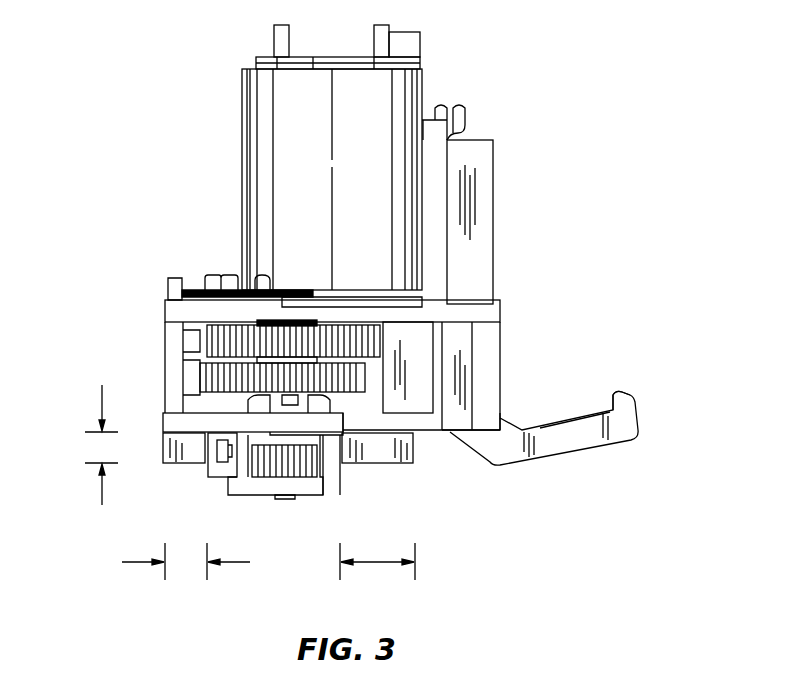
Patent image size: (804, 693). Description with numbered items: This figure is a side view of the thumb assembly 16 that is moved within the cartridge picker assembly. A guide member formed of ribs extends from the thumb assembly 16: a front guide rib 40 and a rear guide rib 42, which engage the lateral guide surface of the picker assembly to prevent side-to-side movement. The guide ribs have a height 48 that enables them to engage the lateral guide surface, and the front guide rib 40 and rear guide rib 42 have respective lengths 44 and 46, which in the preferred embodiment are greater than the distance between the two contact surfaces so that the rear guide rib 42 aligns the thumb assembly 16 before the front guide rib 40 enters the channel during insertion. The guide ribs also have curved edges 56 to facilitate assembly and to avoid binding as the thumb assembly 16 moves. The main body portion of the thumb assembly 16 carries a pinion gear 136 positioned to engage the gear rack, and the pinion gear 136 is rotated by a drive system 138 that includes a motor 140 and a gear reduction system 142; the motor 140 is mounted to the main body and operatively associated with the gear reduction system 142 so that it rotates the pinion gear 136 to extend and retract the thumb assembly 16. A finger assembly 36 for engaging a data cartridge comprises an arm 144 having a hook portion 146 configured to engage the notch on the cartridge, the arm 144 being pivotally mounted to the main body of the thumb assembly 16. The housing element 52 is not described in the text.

The thumb assembly 16 is at (128, 48).
The drive system 138 is at (241, 123).
The motor 140 is at (242, 182).
The gear reduction system 142 is at (215, 341).
The gearbox housing 52 is at (415, 458).
The curved edges 56 is at (143, 470).
The rear guide rib 42 is at (190, 465).
The pinion gear 136 is at (255, 492).
The front guide rib 40 is at (378, 464).
The finger assembly 36 is at (575, 457).
The arm 144 is at (575, 417).
The hook portion 146 is at (613, 392).
The height 48 is at (88, 450).
The length 46 is at (187, 570).
The length 44 is at (377, 562).